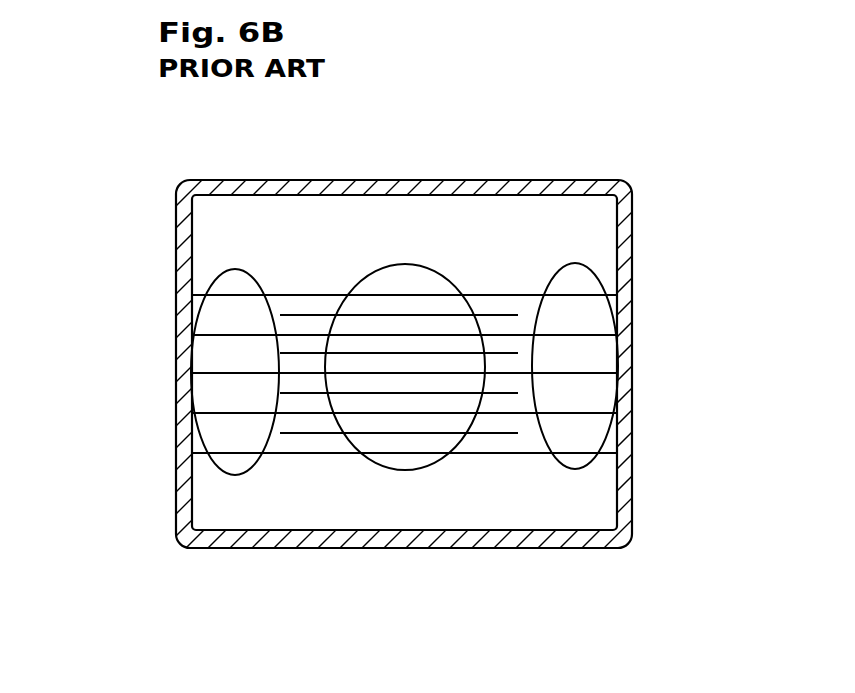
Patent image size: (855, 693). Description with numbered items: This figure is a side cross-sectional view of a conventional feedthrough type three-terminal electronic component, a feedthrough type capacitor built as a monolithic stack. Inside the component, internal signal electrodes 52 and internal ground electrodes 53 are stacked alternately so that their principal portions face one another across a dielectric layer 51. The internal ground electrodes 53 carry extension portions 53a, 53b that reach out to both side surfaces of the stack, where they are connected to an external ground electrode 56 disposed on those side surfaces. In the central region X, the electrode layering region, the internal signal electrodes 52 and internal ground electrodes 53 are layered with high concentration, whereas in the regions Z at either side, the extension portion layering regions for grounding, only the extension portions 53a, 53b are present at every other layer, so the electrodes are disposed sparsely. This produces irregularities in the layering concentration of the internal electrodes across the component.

The dielectric layer 51 is at (318, 307).
The internal signal electrode 52 is at (290, 397).
The internal ground electrode 53 is at (463, 372).
The extension portion of internal ground electrode 53a is at (216, 372).
The extension portion of internal ground electrode 53b is at (584, 371).
The external ground electrode 56 is at (633, 446).
The electrode layering region X is at (437, 268).
The extension portion layering region for grounding Z is at (252, 275).